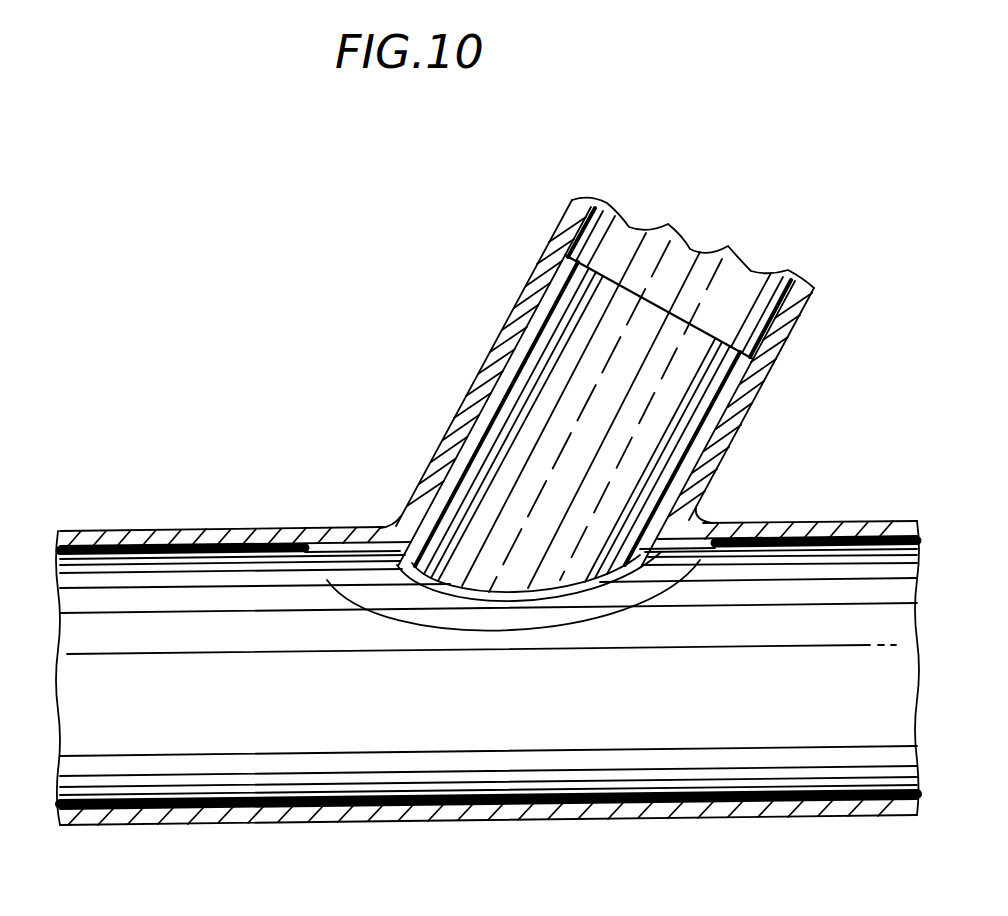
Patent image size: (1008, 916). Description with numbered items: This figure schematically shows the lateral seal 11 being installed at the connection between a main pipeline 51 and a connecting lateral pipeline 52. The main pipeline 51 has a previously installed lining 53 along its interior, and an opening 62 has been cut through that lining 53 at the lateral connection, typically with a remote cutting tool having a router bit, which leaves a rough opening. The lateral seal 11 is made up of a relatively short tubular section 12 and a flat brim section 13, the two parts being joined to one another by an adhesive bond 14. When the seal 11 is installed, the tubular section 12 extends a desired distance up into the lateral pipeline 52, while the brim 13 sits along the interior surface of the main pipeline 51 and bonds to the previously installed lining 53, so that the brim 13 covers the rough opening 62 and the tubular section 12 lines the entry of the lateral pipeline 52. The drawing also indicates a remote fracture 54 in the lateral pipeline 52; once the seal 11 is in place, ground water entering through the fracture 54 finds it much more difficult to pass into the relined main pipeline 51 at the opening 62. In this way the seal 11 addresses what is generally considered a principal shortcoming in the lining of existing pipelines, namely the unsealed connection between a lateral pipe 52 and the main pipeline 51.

The lateral seal 11 is at (362, 622).
The tubular section 12 is at (690, 317).
The flat brim section 13 is at (585, 623).
The adhesive bond 14 is at (494, 596).
The main pipeline 51 is at (405, 812).
The lateral pipeline 52 is at (784, 328).
The lining 53 is at (193, 552).
The remote fracture 54 is at (891, 520).
The opening 62 is at (407, 523).